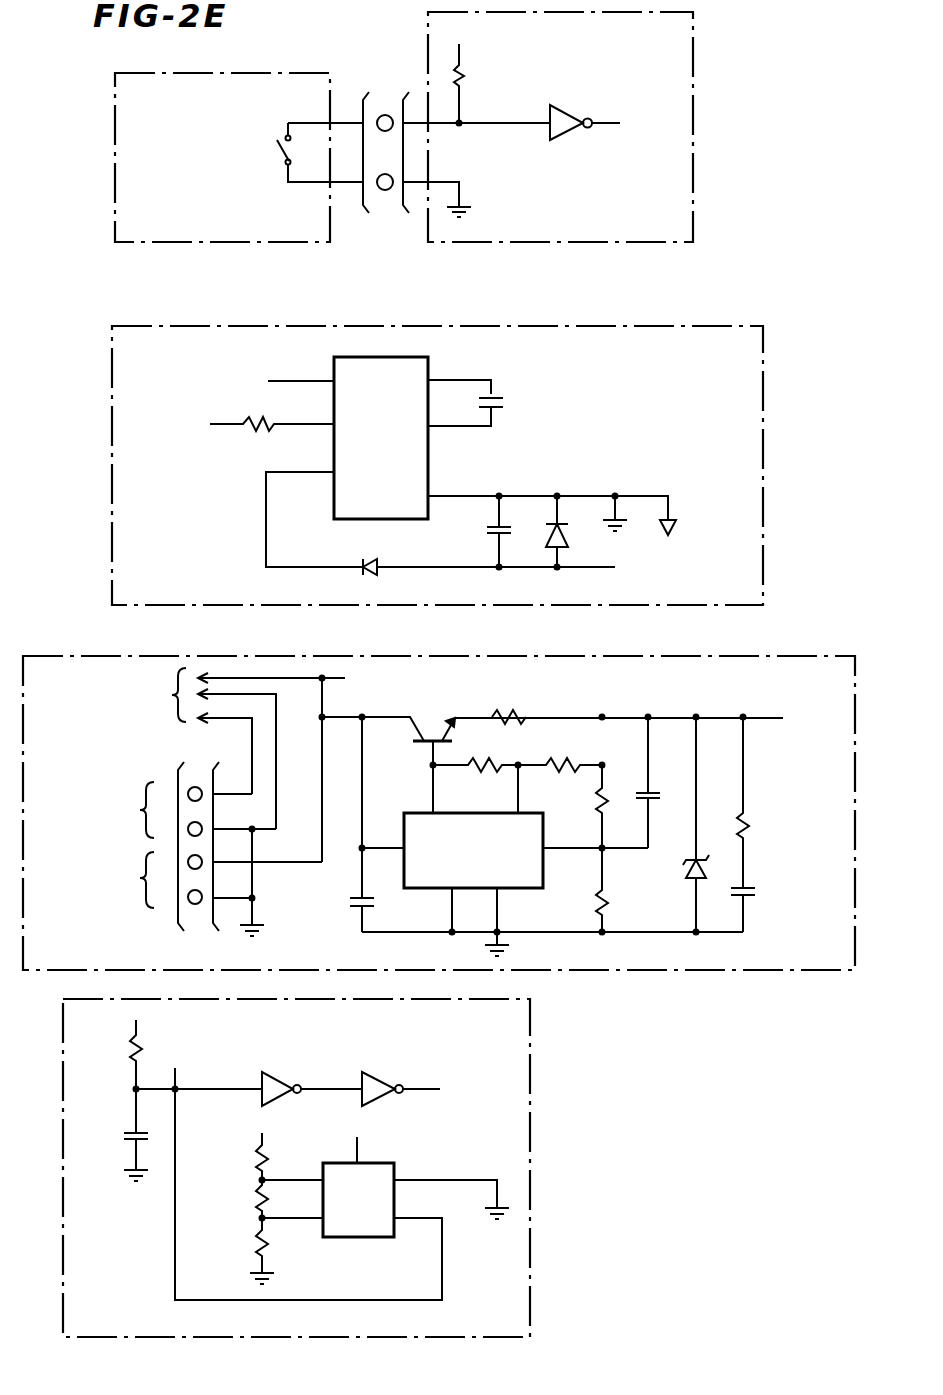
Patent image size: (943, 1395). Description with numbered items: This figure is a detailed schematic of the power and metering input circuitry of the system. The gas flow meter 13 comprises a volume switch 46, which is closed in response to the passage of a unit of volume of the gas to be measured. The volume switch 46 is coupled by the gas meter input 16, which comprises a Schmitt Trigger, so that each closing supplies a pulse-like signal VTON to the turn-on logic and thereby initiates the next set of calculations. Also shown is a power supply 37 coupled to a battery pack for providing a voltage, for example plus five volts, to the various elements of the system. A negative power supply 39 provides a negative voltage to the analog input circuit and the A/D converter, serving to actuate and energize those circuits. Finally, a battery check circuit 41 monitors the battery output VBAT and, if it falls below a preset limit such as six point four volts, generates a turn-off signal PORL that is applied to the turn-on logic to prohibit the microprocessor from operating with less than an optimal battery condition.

The gas flow meter 13 is at (222, 157).
The gas meter input 16 is at (548, 127).
The volume switch 46 is at (279, 157).
The negative power supply 39 is at (437, 466).
The power supply 37 is at (439, 813).
The battery check circuit 41 is at (296, 1168).